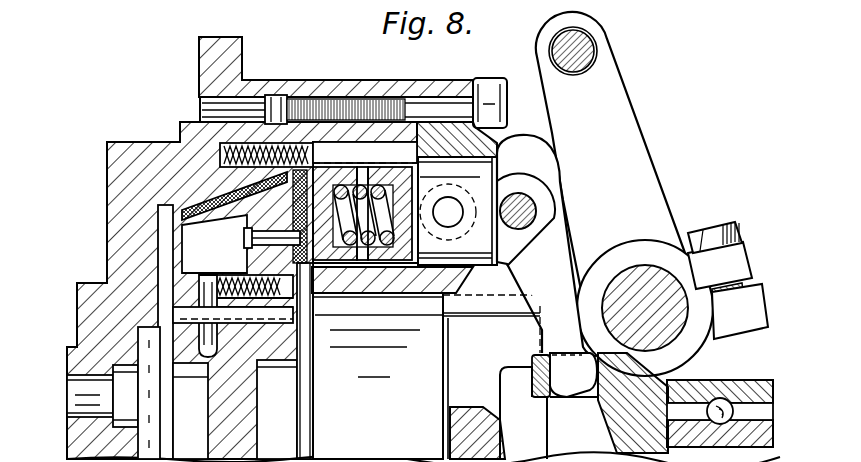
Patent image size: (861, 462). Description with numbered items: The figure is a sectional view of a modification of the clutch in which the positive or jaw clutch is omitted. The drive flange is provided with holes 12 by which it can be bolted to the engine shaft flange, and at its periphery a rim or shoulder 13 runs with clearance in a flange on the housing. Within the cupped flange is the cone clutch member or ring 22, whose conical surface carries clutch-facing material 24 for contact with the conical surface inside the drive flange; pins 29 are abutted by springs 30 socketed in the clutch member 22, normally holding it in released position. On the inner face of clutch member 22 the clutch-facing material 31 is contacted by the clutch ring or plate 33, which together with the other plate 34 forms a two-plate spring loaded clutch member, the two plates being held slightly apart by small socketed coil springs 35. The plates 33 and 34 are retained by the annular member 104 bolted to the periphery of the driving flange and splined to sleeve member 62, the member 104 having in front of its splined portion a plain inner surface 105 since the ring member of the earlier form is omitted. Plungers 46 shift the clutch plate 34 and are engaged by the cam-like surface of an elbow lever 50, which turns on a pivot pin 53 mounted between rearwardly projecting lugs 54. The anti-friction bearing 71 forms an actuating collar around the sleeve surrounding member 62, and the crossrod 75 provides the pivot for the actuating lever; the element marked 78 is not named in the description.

The rim or shoulder 13 is at (208, 45).
The clutch-facing material 24 is at (180, 200).
The clutch member or ring 22 is at (190, 223).
The clutch-facing material 31 is at (260, 238).
The springs 30 is at (210, 300).
The pins 29 is at (200, 325).
The holes 12 is at (83, 400).
The clutch ring or plate 33 is at (328, 173).
The clutch plate 34 is at (390, 167).
The coil springs 35 is at (368, 247).
The annular member 104 is at (460, 150).
The plungers 46 is at (478, 177).
The lugs 54 is at (552, 182).
The pivot pin 53 is at (527, 208).
The lever 78 is at (642, 155).
The crossrod 75 is at (643, 267).
The elbow lever 50 is at (553, 263).
The plain inner surface 105 is at (401, 293).
The sleeve member 62 is at (464, 430).
The anti-friction bearing 71 is at (758, 380).